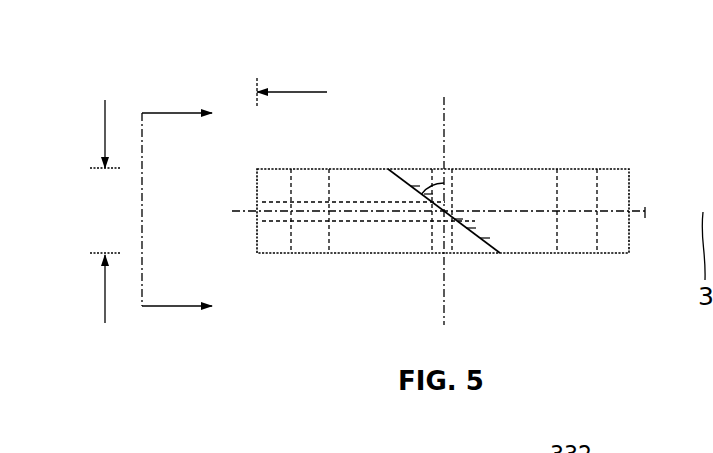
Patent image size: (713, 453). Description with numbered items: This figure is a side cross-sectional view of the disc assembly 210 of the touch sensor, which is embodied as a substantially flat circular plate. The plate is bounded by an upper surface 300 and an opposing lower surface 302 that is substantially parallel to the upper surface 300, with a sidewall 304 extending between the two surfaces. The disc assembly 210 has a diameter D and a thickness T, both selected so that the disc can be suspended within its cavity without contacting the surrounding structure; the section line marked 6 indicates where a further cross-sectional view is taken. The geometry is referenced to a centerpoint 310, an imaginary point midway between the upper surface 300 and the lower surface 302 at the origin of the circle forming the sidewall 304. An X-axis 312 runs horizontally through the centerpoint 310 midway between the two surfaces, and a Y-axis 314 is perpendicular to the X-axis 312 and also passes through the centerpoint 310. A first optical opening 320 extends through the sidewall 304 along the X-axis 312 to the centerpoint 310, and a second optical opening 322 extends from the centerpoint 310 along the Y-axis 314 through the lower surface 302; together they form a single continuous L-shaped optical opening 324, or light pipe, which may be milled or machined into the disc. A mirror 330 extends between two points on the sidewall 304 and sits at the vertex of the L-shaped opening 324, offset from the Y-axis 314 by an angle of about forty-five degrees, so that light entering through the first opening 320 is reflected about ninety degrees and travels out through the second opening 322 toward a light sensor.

The upper surface 300 is at (512, 169).
The lower surface 302 is at (277, 255).
The sidewall 304 is at (632, 188).
The centerpoint 310 is at (446, 203).
The X-axis 312 is at (645, 213).
The Y-axis 314 is at (446, 122).
The first optical opening 320 is at (218, 211).
The second optical opening 322 is at (440, 256).
The L-shaped optical opening 324 is at (368, 202).
The mirror 330 is at (408, 180).
The disc assembly 210 is at (630, 106).
The diameter D is at (290, 92).
The thickness T is at (105, 133).
The section line 6- 6 is at (187, 210).